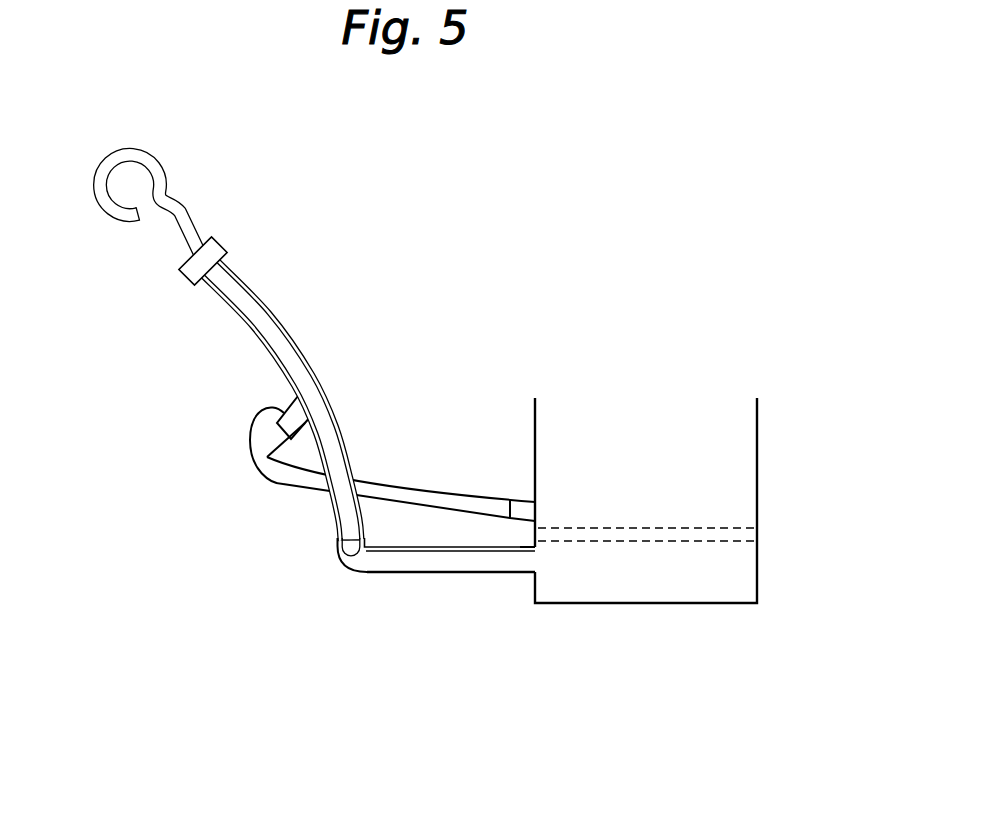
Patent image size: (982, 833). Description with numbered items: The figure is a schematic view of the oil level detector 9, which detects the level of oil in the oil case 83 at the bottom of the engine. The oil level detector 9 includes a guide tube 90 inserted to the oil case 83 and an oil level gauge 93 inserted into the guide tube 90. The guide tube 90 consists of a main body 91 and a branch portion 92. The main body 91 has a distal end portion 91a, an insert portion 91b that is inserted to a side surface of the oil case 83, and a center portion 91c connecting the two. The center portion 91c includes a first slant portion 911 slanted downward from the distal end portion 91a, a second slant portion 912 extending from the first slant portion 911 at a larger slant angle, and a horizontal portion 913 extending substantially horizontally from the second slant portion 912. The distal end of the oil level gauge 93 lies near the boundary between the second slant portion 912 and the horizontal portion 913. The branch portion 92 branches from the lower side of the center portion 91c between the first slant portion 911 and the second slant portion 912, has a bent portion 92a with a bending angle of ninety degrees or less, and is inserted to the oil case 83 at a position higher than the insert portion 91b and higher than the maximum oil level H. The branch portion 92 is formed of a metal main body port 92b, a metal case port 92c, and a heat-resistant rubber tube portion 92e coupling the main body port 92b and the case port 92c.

The oil level detector 9 is at (300, 221).
The guide tube 90 is at (277, 595).
The main body 91 is at (354, 328).
The first slant portion 911 is at (260, 297).
The second slant portion 912 is at (343, 440).
The horizontal portion 913 is at (408, 573).
The distal end portion 91a is at (203, 290).
The insert portion 91b is at (508, 573).
The center portion 91c is at (338, 547).
The branch portion 92 is at (223, 472).
The bent portion 92a is at (252, 462).
The main body port 92b is at (290, 408).
The case port 92c is at (518, 502).
The tube portion 92e is at (403, 486).
The oil level gauge 93 is at (175, 237).
The oil case 83 is at (759, 578).
The maximum oil level H is at (662, 531).